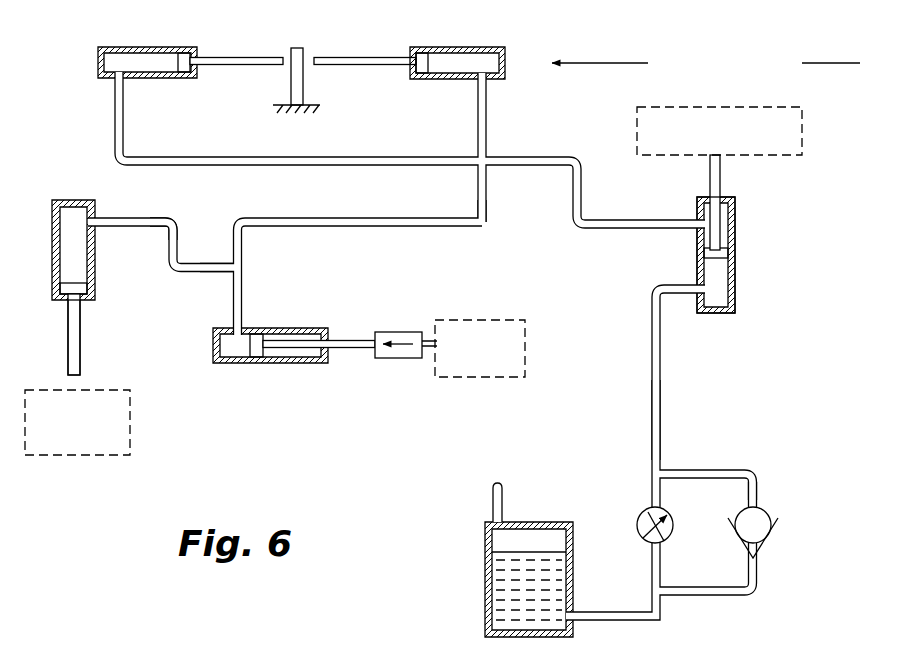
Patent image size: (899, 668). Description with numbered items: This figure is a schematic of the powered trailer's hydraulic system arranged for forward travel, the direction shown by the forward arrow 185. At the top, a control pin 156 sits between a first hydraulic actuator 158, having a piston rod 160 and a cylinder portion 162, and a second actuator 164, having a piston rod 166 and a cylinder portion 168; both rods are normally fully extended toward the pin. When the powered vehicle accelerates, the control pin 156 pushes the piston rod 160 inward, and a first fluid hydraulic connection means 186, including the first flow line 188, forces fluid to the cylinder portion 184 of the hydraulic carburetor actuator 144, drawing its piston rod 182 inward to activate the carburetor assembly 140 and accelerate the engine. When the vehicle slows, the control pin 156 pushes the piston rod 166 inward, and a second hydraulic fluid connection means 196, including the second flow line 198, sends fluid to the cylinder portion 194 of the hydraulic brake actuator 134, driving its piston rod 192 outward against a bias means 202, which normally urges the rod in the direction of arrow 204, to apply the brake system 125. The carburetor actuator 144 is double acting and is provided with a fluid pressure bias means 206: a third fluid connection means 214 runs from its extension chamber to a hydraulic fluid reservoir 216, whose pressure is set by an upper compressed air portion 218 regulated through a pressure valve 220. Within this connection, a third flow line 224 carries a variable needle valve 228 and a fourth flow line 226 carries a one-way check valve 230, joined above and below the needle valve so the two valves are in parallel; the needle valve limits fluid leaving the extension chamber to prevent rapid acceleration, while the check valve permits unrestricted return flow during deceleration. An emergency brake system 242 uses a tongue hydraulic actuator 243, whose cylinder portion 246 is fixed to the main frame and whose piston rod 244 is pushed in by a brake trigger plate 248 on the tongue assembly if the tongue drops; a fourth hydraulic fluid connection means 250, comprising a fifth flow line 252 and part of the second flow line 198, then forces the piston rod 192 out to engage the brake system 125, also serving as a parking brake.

The brake system 125 is at (492, 378).
The hydraulic brake actuator 134 is at (262, 330).
The carburetor assembly 140 is at (770, 157).
The hydraulic carburetor actuator 144 is at (737, 247).
The control pin 156 is at (303, 80).
The first hydraulic actuator 158 is at (157, 44).
The piston rod 160 is at (262, 55).
The cylinder portion 162 is at (150, 79).
The second actuator 164 is at (485, 44).
The piston rod 166 is at (388, 66).
The cylinder portion 168 is at (440, 80).
The piston rod 182 is at (721, 176).
The cylinder portion 184 is at (736, 306).
The forward arrow 185 is at (583, 66).
The first fluid hydraulic connection means 186 is at (390, 168).
The first flow line 188 is at (520, 158).
The piston rod 192 is at (340, 348).
The cylinder portion 194 is at (240, 364).
The second hydraulic fluid connection means 196 is at (336, 229).
The second flow line 198 is at (488, 195).
The bias means 202 is at (385, 359).
The arrow 204 is at (400, 340).
The fluid pressure bias means 206 is at (640, 414).
The third fluid connection means 214 is at (661, 337).
The hydraulic fluid reservoir 216 is at (520, 596).
The upper compressed air portion 218 is at (503, 540).
The pressure valve 220 is at (494, 496).
The third flow line 224 is at (655, 490).
The fourth flow line 226 is at (753, 494).
The variable needle valve 228 is at (669, 538).
The one-way check valve 230 is at (768, 538).
The emergency brake system 242 is at (150, 352).
The tongue hydraulic actuator 243 is at (93, 267).
The piston rod 244 is at (80, 330).
The cylinder portion 246 is at (92, 237).
The brake trigger plate 248 is at (35, 456).
The fourth hydraulic fluid connection means 250 is at (190, 214).
The fifth flow line 252 is at (173, 273).